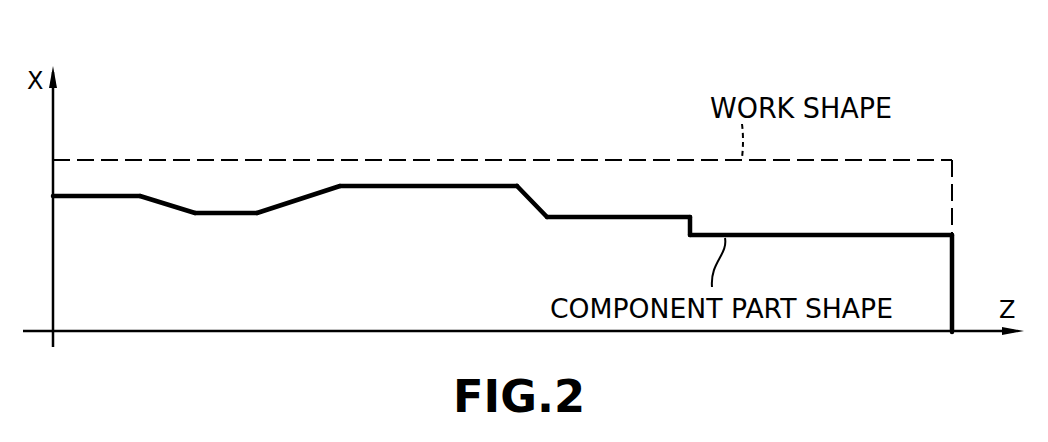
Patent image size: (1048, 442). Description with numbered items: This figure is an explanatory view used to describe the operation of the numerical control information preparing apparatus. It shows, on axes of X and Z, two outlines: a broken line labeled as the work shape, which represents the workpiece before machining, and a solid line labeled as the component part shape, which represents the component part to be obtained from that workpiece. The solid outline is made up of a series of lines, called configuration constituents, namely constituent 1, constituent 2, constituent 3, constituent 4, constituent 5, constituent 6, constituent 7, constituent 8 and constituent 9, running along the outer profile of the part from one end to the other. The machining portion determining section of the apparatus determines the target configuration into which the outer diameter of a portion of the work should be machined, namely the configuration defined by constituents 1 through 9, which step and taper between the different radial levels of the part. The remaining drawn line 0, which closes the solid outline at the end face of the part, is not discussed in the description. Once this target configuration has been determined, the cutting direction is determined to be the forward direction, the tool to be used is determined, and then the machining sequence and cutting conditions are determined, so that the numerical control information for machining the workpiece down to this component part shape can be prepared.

The profile segment l0 (end face of component part shape) 0 is at (939, 283).
The configuration constituent 1 is at (821, 248).
The configuration constituent 2 is at (678, 235).
The configuration constituent 3 is at (618, 231).
The configuration constituent 4 is at (525, 203).
The configuration constituent 5 is at (428, 201).
The configuration constituent 6 is at (298, 206).
The configuration constituent 7 is at (226, 228).
The configuration constituent 8 is at (167, 214).
The configuration constituent 9 is at (96, 211).